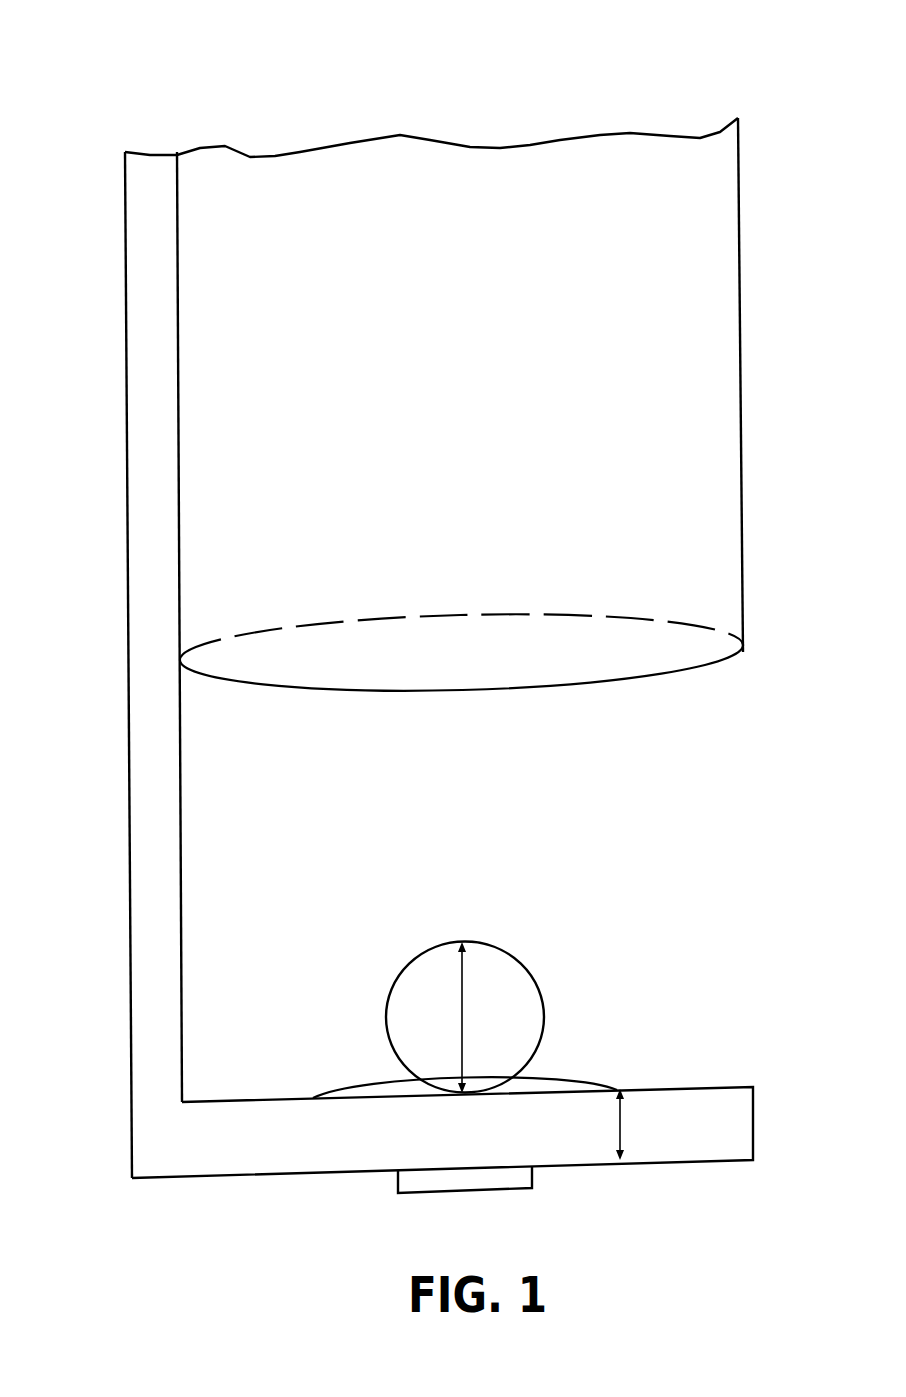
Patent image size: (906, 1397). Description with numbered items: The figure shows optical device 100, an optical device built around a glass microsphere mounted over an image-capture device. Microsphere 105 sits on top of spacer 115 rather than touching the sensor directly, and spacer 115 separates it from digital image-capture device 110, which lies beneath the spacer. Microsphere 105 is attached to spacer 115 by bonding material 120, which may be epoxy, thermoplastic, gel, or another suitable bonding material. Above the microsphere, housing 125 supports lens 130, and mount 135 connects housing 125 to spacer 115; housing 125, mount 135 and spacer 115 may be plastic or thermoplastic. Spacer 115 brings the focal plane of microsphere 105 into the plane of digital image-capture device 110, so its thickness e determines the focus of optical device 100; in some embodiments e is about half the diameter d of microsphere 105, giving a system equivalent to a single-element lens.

The optical device 100 is at (592, 67).
The microsphere 105 is at (513, 982).
The digital image-capture device 110 is at (532, 1177).
The spacer 115 is at (690, 1093).
The bonding material 120 is at (548, 1084).
The housing 125 is at (703, 357).
The lens 130 is at (670, 652).
The mount 135 is at (145, 843).